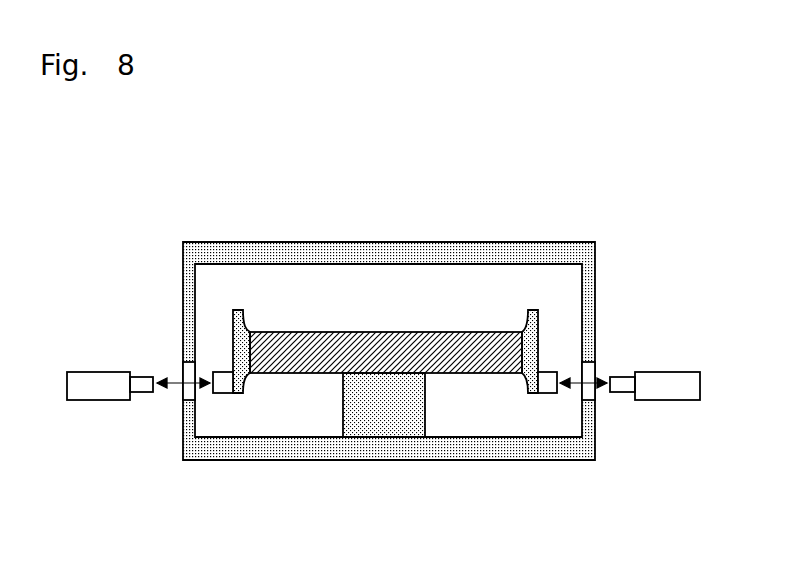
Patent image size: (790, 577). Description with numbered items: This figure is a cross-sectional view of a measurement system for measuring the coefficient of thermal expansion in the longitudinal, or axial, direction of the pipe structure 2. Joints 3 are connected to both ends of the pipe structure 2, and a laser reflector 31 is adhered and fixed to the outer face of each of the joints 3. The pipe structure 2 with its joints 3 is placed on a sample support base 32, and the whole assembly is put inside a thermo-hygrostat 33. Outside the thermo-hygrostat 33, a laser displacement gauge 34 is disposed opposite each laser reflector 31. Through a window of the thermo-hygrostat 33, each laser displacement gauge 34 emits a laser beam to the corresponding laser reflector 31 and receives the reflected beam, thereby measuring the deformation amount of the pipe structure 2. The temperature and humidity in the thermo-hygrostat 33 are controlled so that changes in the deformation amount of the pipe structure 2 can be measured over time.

The pipe structure 2 is at (386, 333).
The joint 3 is at (247, 330).
The laser reflector 31 is at (222, 393).
The sample support base 32 is at (405, 420).
The thermo-hygrostat 33 is at (460, 447).
The laser displacement gauge 34 is at (97, 385).